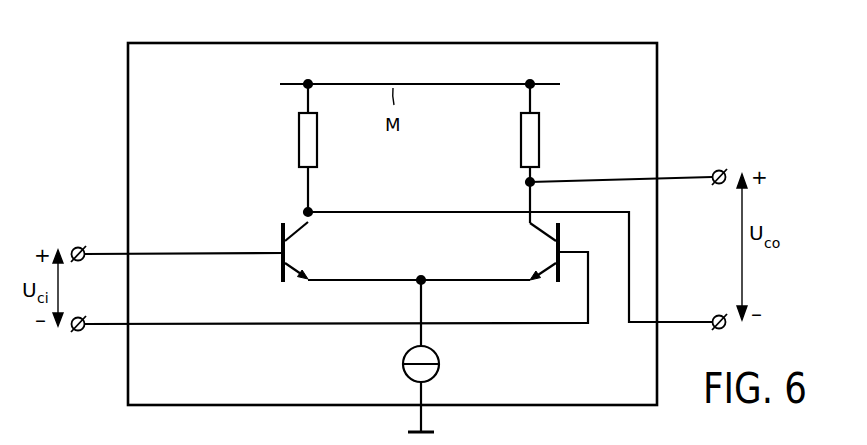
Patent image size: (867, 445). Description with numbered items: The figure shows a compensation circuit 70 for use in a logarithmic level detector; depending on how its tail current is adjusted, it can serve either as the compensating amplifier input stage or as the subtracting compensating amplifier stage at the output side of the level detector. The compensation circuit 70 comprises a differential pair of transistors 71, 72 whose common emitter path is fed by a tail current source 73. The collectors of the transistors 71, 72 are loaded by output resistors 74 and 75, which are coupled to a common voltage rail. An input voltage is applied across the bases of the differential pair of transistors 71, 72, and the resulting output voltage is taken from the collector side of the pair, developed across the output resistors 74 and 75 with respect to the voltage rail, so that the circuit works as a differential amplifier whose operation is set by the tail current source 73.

The compensation circuit 70 is at (657, 96).
The differential pair of transistors 71 is at (300, 252).
The differential pair of transistors 72 is at (545, 252).
The tail current source 73 is at (440, 366).
The output resistor 74 is at (298, 143).
The output resistor 75 is at (521, 137).